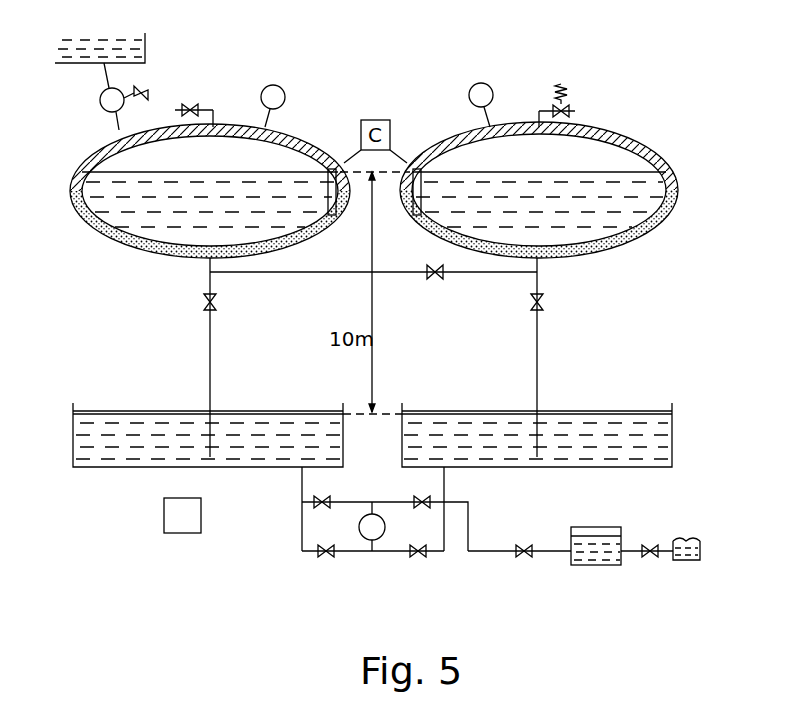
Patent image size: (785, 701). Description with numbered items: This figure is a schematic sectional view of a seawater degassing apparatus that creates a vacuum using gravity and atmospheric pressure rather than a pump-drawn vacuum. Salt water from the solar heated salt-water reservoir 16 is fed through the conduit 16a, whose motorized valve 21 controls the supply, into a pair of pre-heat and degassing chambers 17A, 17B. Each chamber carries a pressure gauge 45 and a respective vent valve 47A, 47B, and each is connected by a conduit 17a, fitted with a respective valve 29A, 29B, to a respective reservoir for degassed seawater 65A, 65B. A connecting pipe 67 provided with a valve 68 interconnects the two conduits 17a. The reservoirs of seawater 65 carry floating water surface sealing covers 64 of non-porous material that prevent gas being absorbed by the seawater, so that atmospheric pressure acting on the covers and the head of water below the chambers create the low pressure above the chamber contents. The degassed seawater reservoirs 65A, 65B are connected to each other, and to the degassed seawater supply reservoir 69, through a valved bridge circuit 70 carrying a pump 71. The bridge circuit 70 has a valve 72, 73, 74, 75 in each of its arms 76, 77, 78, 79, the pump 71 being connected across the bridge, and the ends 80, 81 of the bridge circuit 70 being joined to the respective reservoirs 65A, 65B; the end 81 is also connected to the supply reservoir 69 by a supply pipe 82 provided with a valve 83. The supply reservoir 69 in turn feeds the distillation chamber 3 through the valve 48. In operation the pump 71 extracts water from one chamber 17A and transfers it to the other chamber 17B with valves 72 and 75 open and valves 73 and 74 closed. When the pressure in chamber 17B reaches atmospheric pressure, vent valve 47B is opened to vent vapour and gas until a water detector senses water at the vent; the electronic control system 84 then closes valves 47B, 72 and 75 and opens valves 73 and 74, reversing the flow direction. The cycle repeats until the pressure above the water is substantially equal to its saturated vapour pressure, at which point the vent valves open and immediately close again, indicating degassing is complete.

The distillation chamber 3 is at (688, 534).
The solar heated salt-water reservoir 16 is at (145, 36).
The conduit 16a is at (104, 79).
The motorized valve 21 is at (147, 90).
The pressure gauge 45 is at (286, 96).
The vent valve 47A is at (194, 107).
The vent valve 47B is at (566, 100).
The degassing chamber 17A is at (126, 257).
The degassing chamber 17B is at (645, 247).
The conduit 17a is at (211, 352).
The valve 29A is at (217, 302).
The valve 29B is at (544, 304).
The floating water surface sealing cover 64 is at (255, 411).
The reservoir of seawater 65 is at (404, 438).
The reservoir for degassed seawater 65A is at (124, 468).
The reservoir for degassed seawater 65B is at (660, 440).
The connecting pipe 67 is at (386, 272).
The valve 68 is at (436, 280).
The degassed seawater supply reservoir 69 is at (600, 565).
The valved bridge circuit 70 is at (365, 525).
The pump 71 is at (372, 541).
The valve 72 is at (316, 500).
The valve 73 is at (428, 500).
The valve 74 is at (322, 556).
The valve 75 is at (418, 558).
The arm 76 is at (340, 500).
The arm 77 is at (406, 500).
The arm 78 is at (300, 548).
The arm 79 is at (392, 553).
The end of bridge circuit 80 is at (300, 522).
The end of bridge circuit 81 is at (470, 502).
The supply pipe 82 is at (487, 552).
The valve 83 is at (526, 558).
The valve 48 is at (650, 558).
The electronic control system 84 is at (174, 533).